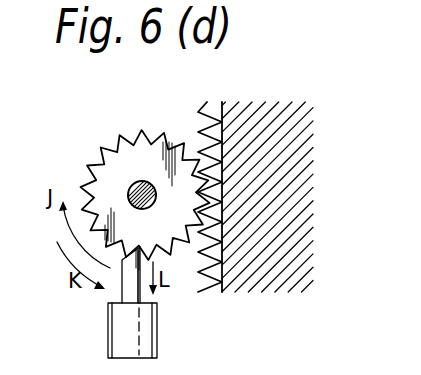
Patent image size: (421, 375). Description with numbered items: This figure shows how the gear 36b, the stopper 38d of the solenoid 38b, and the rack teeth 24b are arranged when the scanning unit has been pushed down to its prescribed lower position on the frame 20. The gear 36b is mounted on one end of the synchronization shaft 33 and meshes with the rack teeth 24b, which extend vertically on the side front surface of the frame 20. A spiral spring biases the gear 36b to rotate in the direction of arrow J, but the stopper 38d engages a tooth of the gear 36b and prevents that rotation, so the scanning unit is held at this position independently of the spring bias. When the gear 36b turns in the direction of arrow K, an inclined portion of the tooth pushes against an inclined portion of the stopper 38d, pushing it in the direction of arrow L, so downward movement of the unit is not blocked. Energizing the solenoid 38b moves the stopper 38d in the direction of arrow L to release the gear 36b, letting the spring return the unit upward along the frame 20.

The gear 36b is at (119, 168).
The synchronization shaft 33 is at (142, 181).
The rack teeth 24b is at (213, 102).
The frame 20 is at (281, 110).
The stopper 38d is at (126, 289).
The solenoid 38b is at (146, 336).